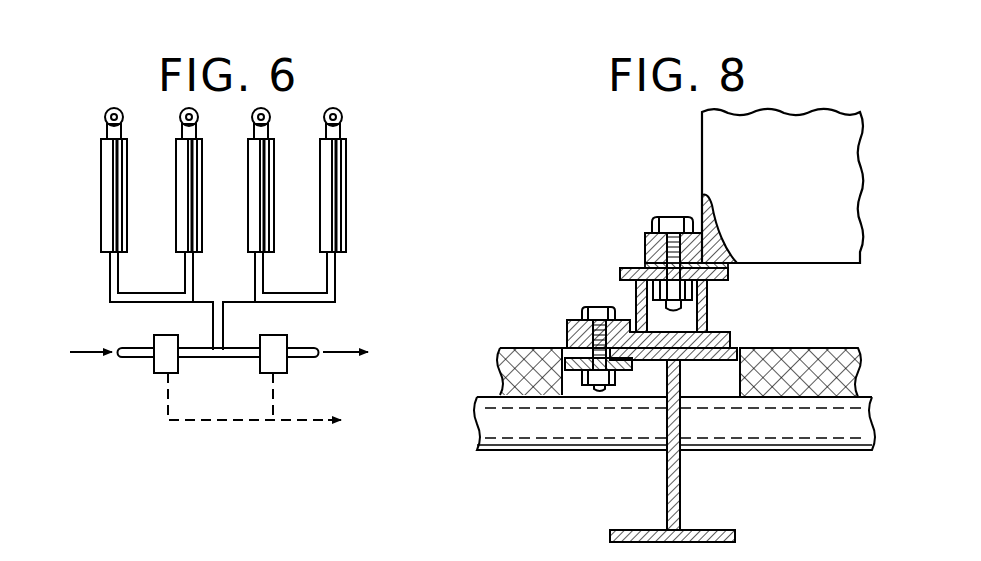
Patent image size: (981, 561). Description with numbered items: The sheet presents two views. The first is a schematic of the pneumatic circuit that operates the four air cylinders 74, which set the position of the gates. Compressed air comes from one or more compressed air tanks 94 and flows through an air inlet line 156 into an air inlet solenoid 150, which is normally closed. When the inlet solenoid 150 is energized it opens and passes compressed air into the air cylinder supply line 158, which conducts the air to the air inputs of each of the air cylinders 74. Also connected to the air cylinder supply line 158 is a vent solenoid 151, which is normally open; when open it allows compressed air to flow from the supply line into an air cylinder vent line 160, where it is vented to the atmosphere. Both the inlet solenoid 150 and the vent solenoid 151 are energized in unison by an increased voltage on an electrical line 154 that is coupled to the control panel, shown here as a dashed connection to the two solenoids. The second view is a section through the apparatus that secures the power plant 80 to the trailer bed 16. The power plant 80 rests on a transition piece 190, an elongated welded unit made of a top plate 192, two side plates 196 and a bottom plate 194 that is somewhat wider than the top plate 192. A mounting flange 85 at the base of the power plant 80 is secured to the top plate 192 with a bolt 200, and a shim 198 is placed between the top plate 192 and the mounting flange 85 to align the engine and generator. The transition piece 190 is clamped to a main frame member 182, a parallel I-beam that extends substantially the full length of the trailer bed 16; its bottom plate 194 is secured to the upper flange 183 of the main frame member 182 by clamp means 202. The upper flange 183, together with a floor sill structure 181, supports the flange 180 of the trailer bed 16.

In FIG. 6, the air cylinders 74 is at (190, 202).
In FIG. 6, the compressed air tanks 94 is at (61, 356).
In FIG. 6, the air inlet solenoid 150 is at (178, 370).
In FIG. 6, the vent solenoid 151 is at (288, 371).
In FIG. 6, the electrical line 154 is at (290, 421).
In FIG. 6, the air inlet line 156 is at (140, 356).
In FIG. 6, the air cylinder supply line 158 is at (197, 348).
In FIG. 6, the air cylinder vent line 160 is at (300, 349).
In FIG. 8, the trailer bed 16 is at (538, 385).
In FIG. 8, the power plant 80 is at (800, 178).
In FIG. 8, the mounting flanges 85 is at (645, 243).
In FIG. 8, the flange of trailer bed 180 is at (840, 347).
In FIG. 8, the floor sill structure 181 is at (793, 450).
In FIG. 8, the main frame members 182 is at (680, 484).
In FIG. 8, the upper flange 183 is at (708, 360).
In FIG. 8, the transition pieces 190 is at (750, 274).
In FIG. 8, the top plate 192 is at (645, 265).
In FIG. 8, the bottom plate 194 is at (733, 338).
In FIG. 8, the side plates 196 is at (636, 300).
In FIG. 8, the shims 198 is at (716, 210).
In FIG. 8, the bolts 200 is at (670, 217).
In FIG. 8, the clamp means 202 is at (553, 318).